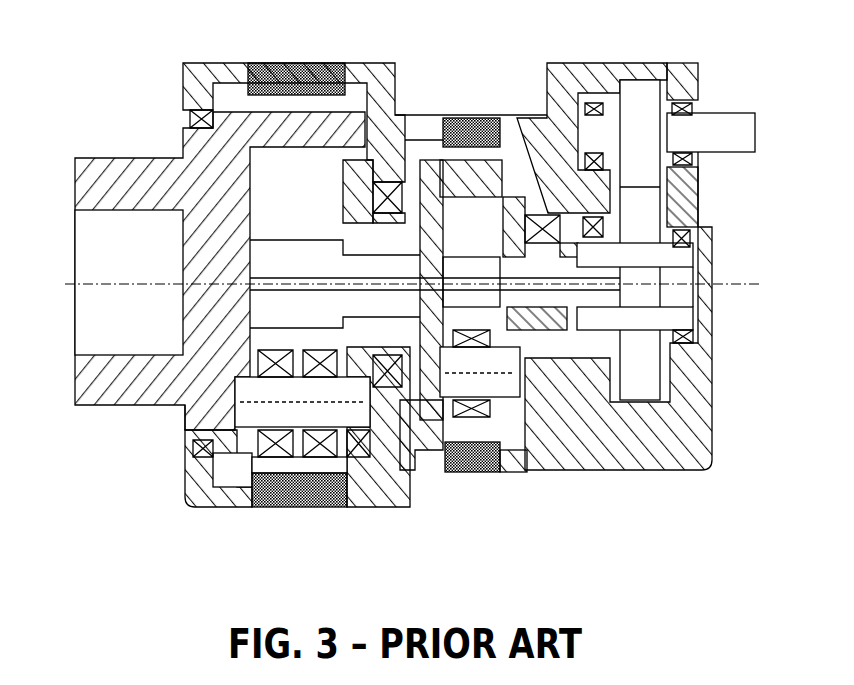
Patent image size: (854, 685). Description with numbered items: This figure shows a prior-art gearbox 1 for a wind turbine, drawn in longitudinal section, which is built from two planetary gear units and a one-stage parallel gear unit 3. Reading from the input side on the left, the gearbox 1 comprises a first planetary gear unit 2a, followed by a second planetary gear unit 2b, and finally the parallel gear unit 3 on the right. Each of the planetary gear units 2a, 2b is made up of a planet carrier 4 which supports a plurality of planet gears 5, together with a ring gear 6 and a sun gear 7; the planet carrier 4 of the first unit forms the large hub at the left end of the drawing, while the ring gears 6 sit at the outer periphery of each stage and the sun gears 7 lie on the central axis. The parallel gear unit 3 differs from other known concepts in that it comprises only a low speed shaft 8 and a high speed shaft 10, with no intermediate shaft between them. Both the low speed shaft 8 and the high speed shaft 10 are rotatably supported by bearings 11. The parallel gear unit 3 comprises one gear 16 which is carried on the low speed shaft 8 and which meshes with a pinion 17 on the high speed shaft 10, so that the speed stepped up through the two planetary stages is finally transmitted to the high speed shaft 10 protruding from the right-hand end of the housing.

The gearbox 1 is at (94, 62).
The first planetary gear unit 2a is at (297, 530).
The second planetary gear unit 2b is at (470, 492).
The one-stage parallel gear unit 3 is at (625, 492).
The planet carrier 4 is at (130, 393).
The planet gears 5 is at (270, 462).
The ring gear 6 is at (284, 83).
The sun gear 7 is at (265, 265).
The low speed shaft 8 is at (695, 283).
The high speed shaft 10 is at (731, 130).
The bearings 11 is at (592, 105).
The gear 16 is at (642, 233).
The pinion 17 is at (641, 112).